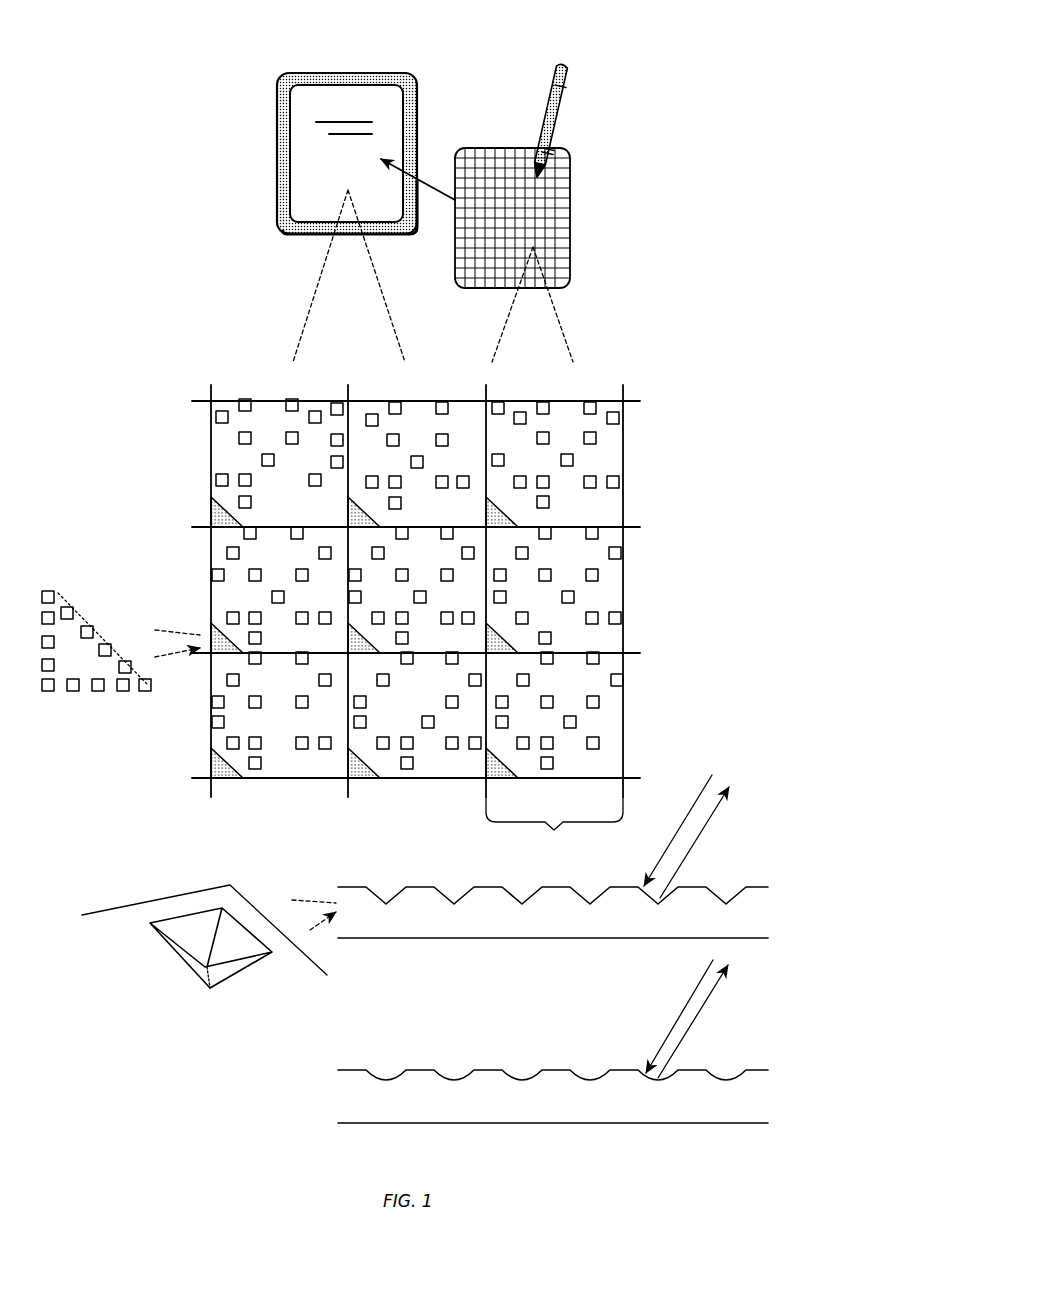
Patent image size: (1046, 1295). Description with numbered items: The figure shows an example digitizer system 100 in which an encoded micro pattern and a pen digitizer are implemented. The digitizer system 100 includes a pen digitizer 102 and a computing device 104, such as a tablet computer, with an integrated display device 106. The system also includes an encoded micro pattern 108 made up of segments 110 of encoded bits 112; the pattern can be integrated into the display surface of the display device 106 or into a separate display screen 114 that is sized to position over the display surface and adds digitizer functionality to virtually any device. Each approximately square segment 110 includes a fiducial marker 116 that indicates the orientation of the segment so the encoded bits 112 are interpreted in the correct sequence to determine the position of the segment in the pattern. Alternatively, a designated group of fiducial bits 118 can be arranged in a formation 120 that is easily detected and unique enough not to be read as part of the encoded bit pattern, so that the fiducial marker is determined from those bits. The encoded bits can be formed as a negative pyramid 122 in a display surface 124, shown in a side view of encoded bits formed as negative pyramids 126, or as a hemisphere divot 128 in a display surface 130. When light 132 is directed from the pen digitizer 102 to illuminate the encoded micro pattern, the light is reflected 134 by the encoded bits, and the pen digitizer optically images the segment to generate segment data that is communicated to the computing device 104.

The digitizer system 100 is at (739, 69).
The pen digitizer 102 is at (562, 103).
The computing device 104 is at (277, 133).
The display device 106 is at (317, 102).
The encoded micro pattern 108 is at (406, 579).
The segment 110 is at (257, 400).
The encoded bits 112 is at (220, 470).
The display screen 114 is at (572, 190).
The fiducial marker 116 is at (211, 497).
The fiducial bits 118 is at (107, 656).
The formation 120 is at (82, 617).
The negative pyramid 122 is at (188, 982).
The display surface 124 is at (596, 879).
The negative pyramids 126 is at (455, 885).
The hemisphere divot 128 is at (455, 1068).
The display surface 130 is at (597, 1041).
The light 132 is at (727, 761).
The reflected light 134 is at (776, 781).